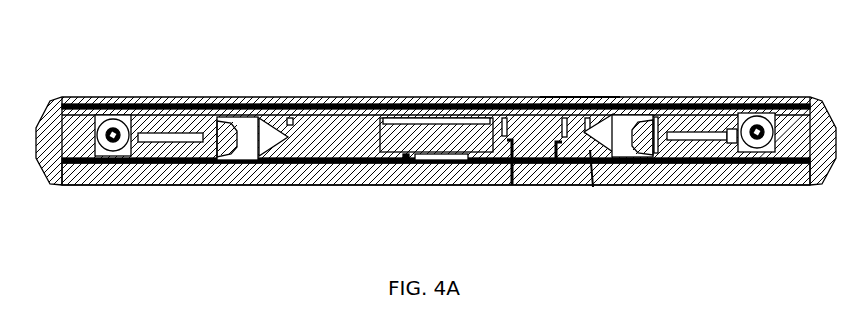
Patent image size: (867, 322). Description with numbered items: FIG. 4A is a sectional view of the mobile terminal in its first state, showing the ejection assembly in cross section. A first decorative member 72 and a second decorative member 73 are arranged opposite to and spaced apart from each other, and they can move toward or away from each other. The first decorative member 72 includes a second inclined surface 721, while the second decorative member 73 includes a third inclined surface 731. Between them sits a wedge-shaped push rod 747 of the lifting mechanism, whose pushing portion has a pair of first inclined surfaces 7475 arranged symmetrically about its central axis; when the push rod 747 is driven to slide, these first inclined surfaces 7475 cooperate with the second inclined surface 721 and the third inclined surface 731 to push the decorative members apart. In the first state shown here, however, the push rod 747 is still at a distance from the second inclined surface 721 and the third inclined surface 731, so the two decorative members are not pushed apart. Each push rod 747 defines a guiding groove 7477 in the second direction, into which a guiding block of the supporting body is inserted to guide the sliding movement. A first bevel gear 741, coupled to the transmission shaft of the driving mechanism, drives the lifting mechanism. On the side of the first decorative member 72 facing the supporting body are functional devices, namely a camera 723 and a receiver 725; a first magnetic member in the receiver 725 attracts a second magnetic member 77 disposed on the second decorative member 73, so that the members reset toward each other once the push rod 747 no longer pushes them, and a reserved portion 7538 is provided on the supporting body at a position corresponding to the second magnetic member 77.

The first decorative member 72 is at (408, 96).
The second decorative member 73 is at (305, 186).
The second magnetic member 77 is at (465, 96).
The second inclined surface 721 is at (592, 96).
The camera 723 is at (512, 186).
The receiver 725 is at (412, 186).
The third inclined surface 731 is at (593, 187).
The first bevel gear 741 is at (100, 97).
The push rod 747 is at (245, 84).
The guiding groove 7477 is at (167, 84).
The first inclined surfaces 7475 is at (668, 96).
The reserved portion 7538 is at (513, 96).